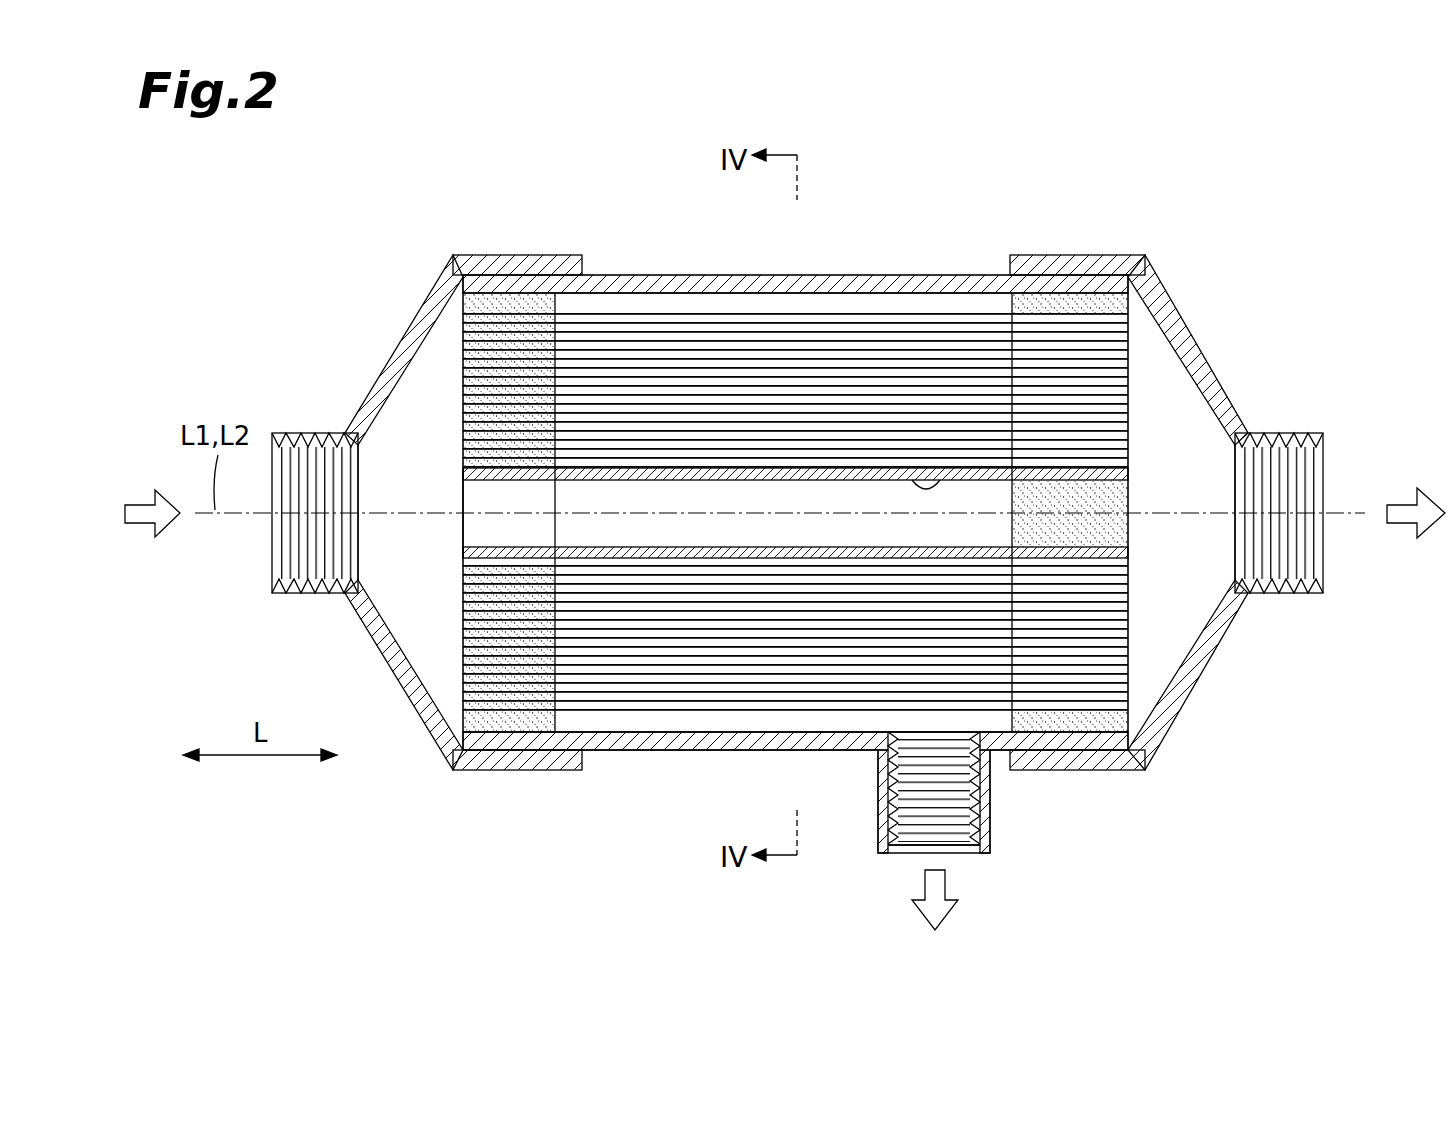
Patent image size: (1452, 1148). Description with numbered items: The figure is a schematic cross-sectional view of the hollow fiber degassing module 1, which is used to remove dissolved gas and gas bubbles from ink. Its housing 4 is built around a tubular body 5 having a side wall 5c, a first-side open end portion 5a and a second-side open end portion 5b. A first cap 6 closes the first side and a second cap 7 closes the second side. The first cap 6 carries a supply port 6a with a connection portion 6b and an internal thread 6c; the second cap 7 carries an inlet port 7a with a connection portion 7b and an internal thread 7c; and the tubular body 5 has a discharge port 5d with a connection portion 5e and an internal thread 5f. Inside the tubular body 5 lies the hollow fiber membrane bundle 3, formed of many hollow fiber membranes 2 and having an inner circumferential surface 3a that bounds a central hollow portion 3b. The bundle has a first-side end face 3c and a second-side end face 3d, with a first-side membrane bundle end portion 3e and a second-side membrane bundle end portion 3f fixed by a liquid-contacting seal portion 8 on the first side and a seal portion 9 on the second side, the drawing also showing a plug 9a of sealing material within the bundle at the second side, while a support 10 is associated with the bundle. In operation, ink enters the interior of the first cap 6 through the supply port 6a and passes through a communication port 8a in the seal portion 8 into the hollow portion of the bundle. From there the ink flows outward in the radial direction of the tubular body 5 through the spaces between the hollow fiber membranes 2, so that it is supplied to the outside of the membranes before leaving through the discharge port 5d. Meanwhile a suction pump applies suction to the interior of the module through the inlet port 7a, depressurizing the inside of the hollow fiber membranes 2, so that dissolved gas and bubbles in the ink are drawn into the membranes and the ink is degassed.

The hollow fiber degassing module 1 is at (1236, 185).
The hollow fiber membrane 2 is at (606, 714).
The hollow fiber membrane bundle 3 is at (704, 728).
The inner circumferential surface 3a is at (650, 480).
The hollow portion 3b is at (770, 537).
The first-side end face 3c is at (458, 348).
The second-side end face 3d is at (1132, 352).
The first-side membrane bundle end portion 3e is at (556, 768).
The second-side membrane bundle end portion 3f is at (1066, 740).
The housing 4 is at (706, 262).
The tubular body 5 is at (852, 275).
The first-side open end portion 5a is at (516, 295).
The second-side open end portion 5b is at (1078, 295).
The side wall 5c is at (660, 742).
The discharge port 5d is at (918, 730).
The connection portion 5e is at (992, 836).
The internal thread 5f is at (907, 838).
The first cap 6 is at (398, 345).
The supply port 6a is at (360, 445).
The connection portion 6b is at (326, 596).
The internal thread 6c is at (272, 556).
The second cap 7 is at (1196, 333).
The inlet port 7a is at (1232, 452).
The connection portion 7b is at (1282, 596).
The internal thread 7c is at (1320, 560).
The seal portion (liquid contacting portion) 8 is at (492, 730).
The communication port 8a is at (468, 540).
The seal portion 9 is at (1080, 722).
The inner tube plug 9a is at (1130, 487).
The support 10 is at (920, 478).